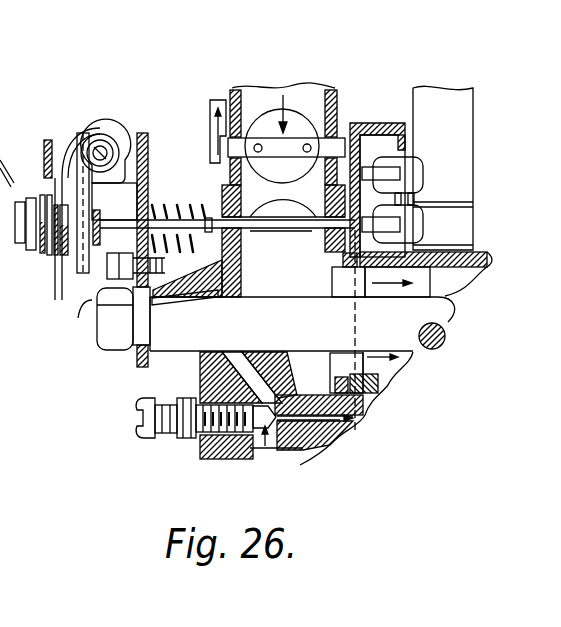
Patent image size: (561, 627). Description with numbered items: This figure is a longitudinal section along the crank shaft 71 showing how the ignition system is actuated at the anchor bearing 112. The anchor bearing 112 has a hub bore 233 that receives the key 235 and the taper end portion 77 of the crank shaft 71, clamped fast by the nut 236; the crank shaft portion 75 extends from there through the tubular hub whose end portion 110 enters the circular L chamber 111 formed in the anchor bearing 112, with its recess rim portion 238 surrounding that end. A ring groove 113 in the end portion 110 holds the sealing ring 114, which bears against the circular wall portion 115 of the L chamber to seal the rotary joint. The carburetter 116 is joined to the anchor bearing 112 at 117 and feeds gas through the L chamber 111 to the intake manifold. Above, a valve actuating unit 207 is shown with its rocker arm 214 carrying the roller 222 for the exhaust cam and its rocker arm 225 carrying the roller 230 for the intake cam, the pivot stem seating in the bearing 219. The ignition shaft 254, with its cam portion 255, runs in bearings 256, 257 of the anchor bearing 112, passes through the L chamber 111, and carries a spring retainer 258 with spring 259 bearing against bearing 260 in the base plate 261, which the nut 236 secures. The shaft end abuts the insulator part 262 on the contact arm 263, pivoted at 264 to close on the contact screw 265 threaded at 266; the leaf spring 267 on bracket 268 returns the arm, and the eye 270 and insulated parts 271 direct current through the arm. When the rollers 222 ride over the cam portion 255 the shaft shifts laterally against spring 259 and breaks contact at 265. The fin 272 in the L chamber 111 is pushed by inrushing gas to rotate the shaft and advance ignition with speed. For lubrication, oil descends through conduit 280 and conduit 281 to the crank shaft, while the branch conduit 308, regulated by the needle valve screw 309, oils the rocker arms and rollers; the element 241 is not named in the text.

The crank shaft 71 is at (446, 338).
The crank shaft portion 75 is at (247, 310).
The taper end portion 77 is at (208, 336).
The end portion 110 is at (330, 376).
The L chamber 111 is at (222, 275).
The anchor bearing 112 is at (215, 449).
The ring groove 113 is at (343, 260).
The sealing ring 114 is at (340, 278).
The circular wall portion 115 is at (337, 385).
The carburetter 116 is at (232, 90).
The carburetter connection 117 is at (222, 200).
The valve actuating unit 207 is at (476, 92).
The rocker arm 214 is at (395, 226).
The bearing 219 is at (100, 138).
The roller 222 is at (405, 212).
The rocker arm 225 is at (405, 160).
The roller 230 is at (393, 172).
The hub bore 233 is at (150, 368).
The key 235 is at (183, 296).
The nut 236 is at (100, 358).
The recess rim portion 238 is at (380, 135).
The spring 241 is at (245, 455).
The ignition shaft 254 is at (98, 130).
The cam portion 255 is at (355, 123).
The bearing 256 is at (330, 240).
The bearing 257 is at (228, 228).
The spring retainer 258 is at (210, 150).
The spring 259 is at (228, 140).
The bearing 260 is at (135, 198).
The base plate 261 is at (100, 146).
The insulator part 262 is at (100, 238).
The contact arm 263 is at (50, 140).
The pivot 264 is at (92, 130).
The contact screw 265 is at (78, 318).
The threaded portion 266 is at (115, 322).
The leaf spring 267 is at (80, 135).
The bracket 268 is at (62, 178).
The eye 270 is at (140, 135).
The insulated parts 271 is at (62, 258).
The fin 272 is at (281, 207).
The conduit 280 is at (262, 448).
The conduit 281 is at (177, 414).
The conduit 308 is at (340, 432).
The needle valve screw 309 is at (137, 428).